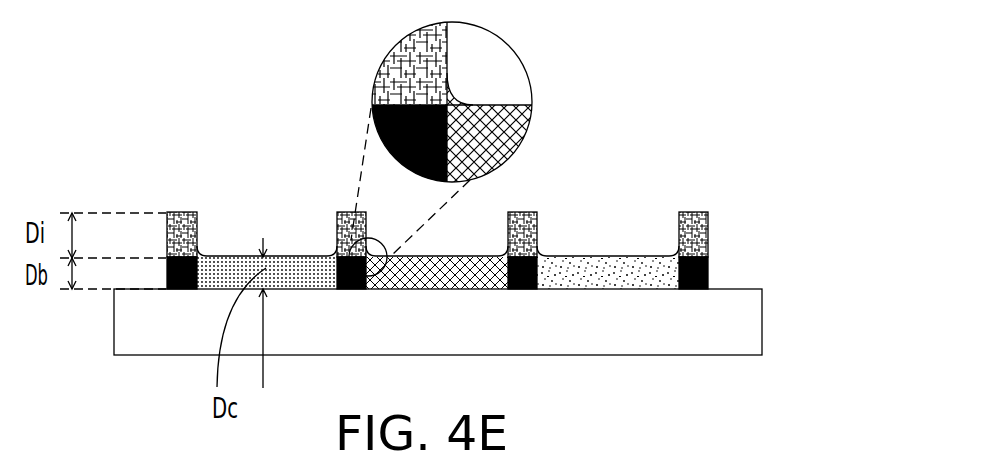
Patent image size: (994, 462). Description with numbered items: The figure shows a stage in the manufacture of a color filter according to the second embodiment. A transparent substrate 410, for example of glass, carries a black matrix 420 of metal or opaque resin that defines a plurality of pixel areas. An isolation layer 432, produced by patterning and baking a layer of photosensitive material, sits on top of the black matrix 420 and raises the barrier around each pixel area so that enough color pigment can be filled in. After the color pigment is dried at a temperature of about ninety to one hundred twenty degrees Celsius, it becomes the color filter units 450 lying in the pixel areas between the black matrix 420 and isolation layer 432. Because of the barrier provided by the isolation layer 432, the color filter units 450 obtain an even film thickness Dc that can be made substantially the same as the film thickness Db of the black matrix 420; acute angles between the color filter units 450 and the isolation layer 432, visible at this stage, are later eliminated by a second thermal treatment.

The transparent substrate 410 is at (718, 322).
The black matrix 420 is at (708, 268).
The isolation layer 432 is at (708, 229).
The color filter units 450 is at (613, 277).